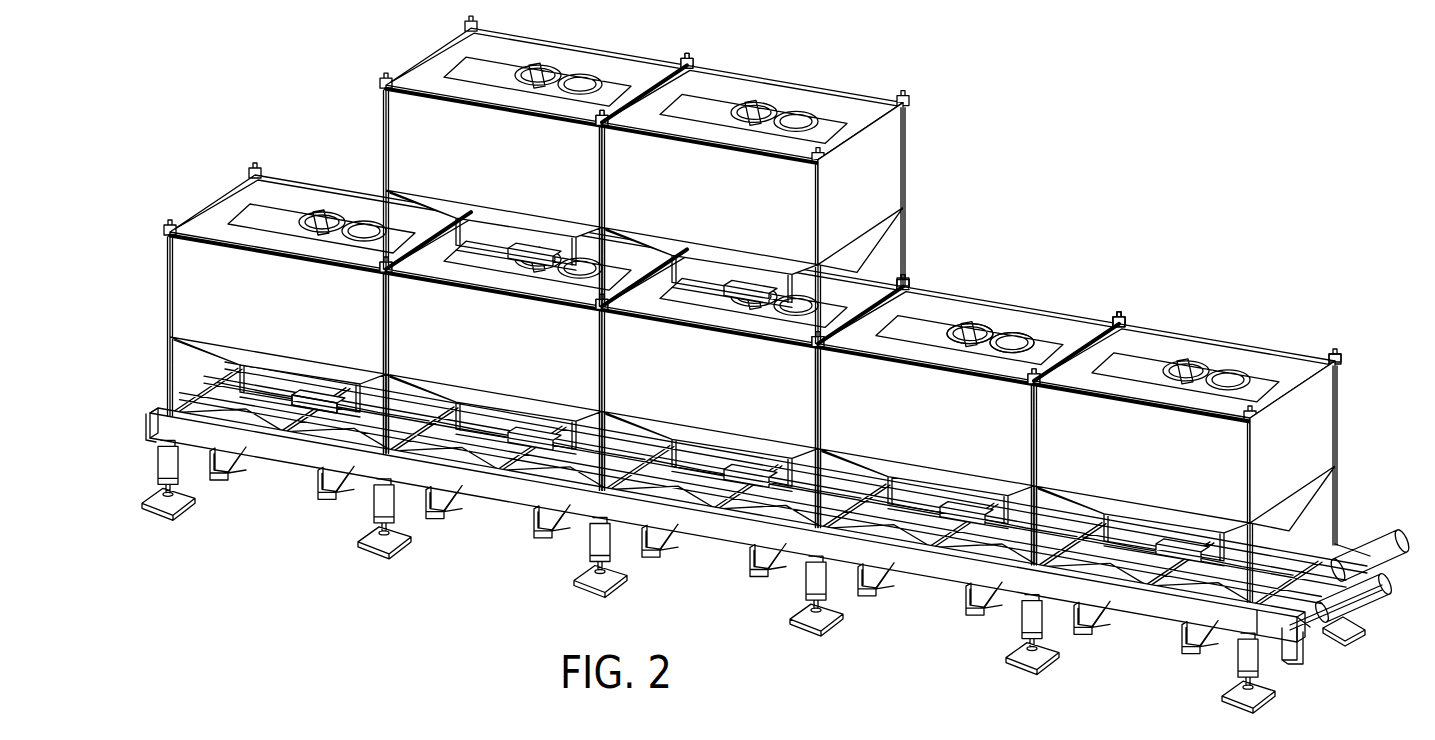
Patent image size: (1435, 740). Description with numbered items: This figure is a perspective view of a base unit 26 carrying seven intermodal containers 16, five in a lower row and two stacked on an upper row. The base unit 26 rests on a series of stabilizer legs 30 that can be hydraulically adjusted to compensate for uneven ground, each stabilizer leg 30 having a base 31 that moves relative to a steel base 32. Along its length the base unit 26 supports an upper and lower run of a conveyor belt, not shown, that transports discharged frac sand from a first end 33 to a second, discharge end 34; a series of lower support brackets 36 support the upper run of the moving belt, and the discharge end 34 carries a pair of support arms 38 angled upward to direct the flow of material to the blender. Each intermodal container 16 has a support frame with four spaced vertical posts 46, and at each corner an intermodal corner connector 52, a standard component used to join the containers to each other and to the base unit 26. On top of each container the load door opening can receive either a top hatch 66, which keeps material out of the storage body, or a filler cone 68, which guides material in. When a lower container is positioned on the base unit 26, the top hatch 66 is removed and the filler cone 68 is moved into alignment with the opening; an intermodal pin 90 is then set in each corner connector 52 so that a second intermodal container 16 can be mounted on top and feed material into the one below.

The intermodal container 16 is at (385, 138).
The base unit 26 is at (1148, 620).
The stabilizer leg 30 is at (1028, 626).
The base 31 is at (830, 626).
The steel base 32 is at (722, 526).
The first end 33 is at (156, 424).
The discharge end 34 is at (1370, 592).
The lower support bracket 36 is at (560, 527).
The support arm 38 is at (1345, 572).
The vertical post 46 is at (286, 403).
The intermodal corner connector 52 is at (907, 280).
The top hatch 66 is at (965, 331).
The filler cone 68 is at (1034, 337).
The intermodal pin 90 is at (1125, 320).